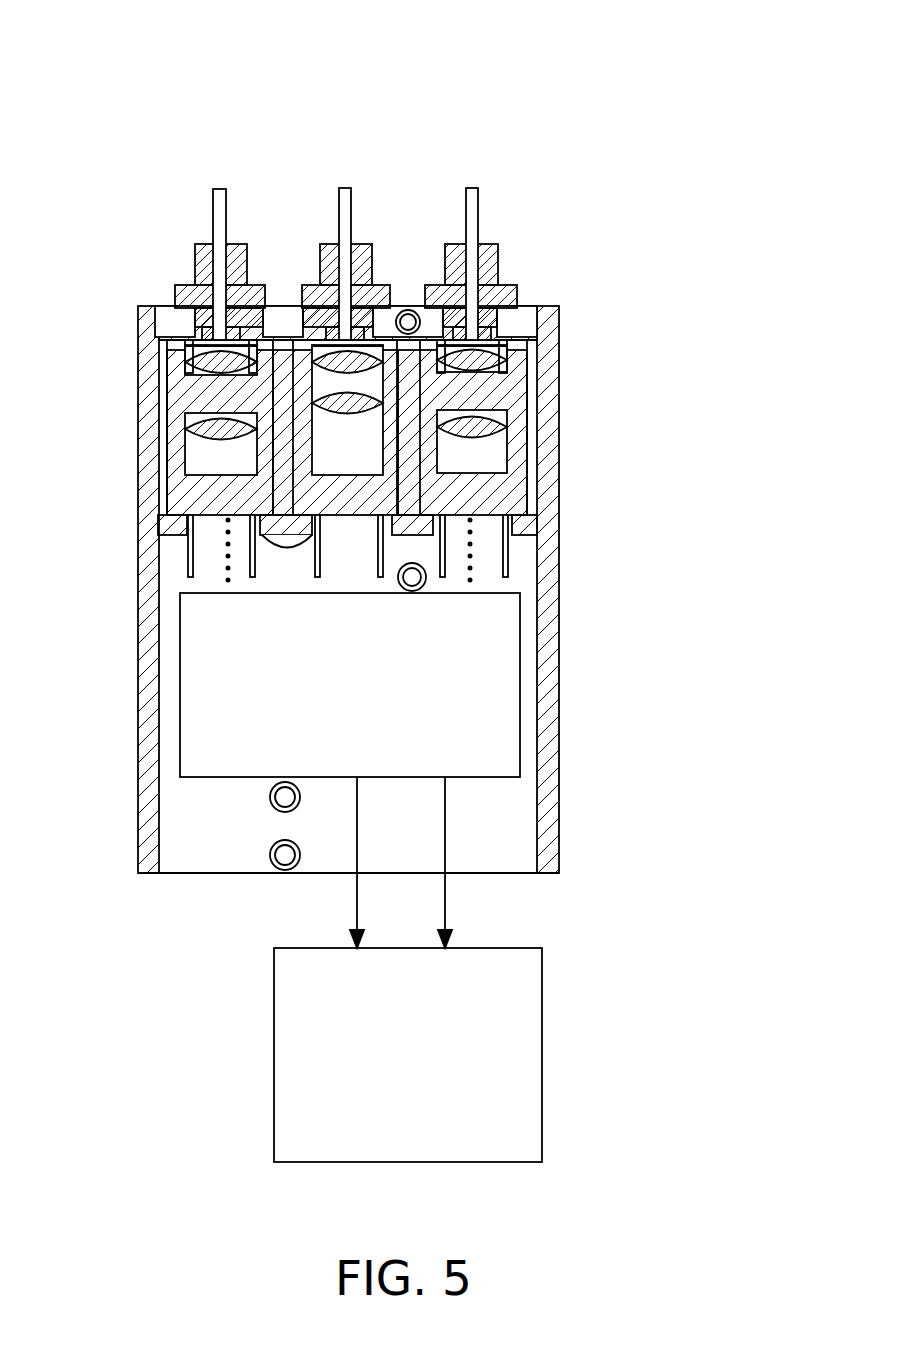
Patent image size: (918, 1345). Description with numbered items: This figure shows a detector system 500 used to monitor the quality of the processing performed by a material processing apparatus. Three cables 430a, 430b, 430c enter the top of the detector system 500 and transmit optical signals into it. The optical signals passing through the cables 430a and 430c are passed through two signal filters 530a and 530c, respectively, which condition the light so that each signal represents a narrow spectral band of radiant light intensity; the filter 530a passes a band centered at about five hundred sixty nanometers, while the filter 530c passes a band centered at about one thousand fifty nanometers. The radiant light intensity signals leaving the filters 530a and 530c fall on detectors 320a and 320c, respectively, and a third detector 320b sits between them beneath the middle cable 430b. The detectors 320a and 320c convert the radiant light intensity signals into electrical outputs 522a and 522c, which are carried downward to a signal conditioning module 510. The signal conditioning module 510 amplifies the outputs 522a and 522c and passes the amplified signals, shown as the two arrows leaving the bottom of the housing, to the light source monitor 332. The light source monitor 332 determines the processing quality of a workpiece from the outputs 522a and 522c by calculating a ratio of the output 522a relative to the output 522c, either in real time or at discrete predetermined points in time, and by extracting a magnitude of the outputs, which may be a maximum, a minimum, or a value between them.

The detector system 500 is at (757, 50).
The cable 430a is at (470, 185).
The cable 430b is at (343, 185).
The cable 430c is at (218, 186).
The signal filter 530a is at (545, 377).
The signal filter 530c is at (183, 400).
The detector 320a is at (490, 492).
The detector 320b is at (437, 468).
The detector 320c is at (197, 493).
The output 522a is at (470, 565).
The output 522c is at (227, 568).
The signal conditioning module 510 is at (522, 666).
The light source monitor 332 is at (543, 1022).